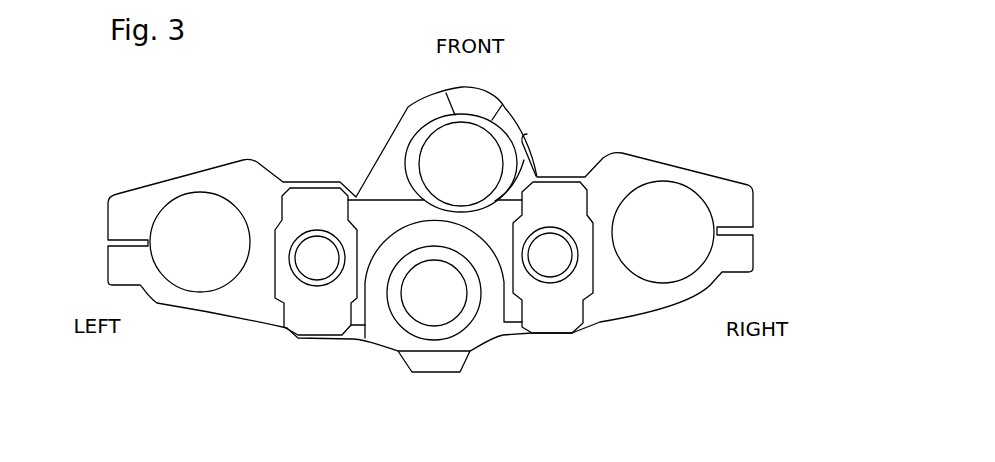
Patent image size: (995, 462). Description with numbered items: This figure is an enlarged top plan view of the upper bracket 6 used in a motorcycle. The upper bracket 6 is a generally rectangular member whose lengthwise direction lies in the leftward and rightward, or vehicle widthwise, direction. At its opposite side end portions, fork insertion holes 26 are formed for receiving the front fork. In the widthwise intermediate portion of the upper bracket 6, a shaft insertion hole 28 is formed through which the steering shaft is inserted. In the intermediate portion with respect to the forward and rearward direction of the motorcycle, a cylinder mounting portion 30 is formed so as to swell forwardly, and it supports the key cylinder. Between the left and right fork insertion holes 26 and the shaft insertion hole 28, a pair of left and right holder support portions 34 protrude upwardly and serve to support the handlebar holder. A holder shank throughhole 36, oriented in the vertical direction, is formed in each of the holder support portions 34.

The upper bracket 6 is at (676, 153).
The fork insertion holes 26 is at (185, 197).
The shaft insertion hole 28 is at (456, 322).
The cylinder mounting portion 30 is at (398, 122).
The holder support portions 34 is at (302, 323).
The holder shank throughhole 36 is at (308, 238).